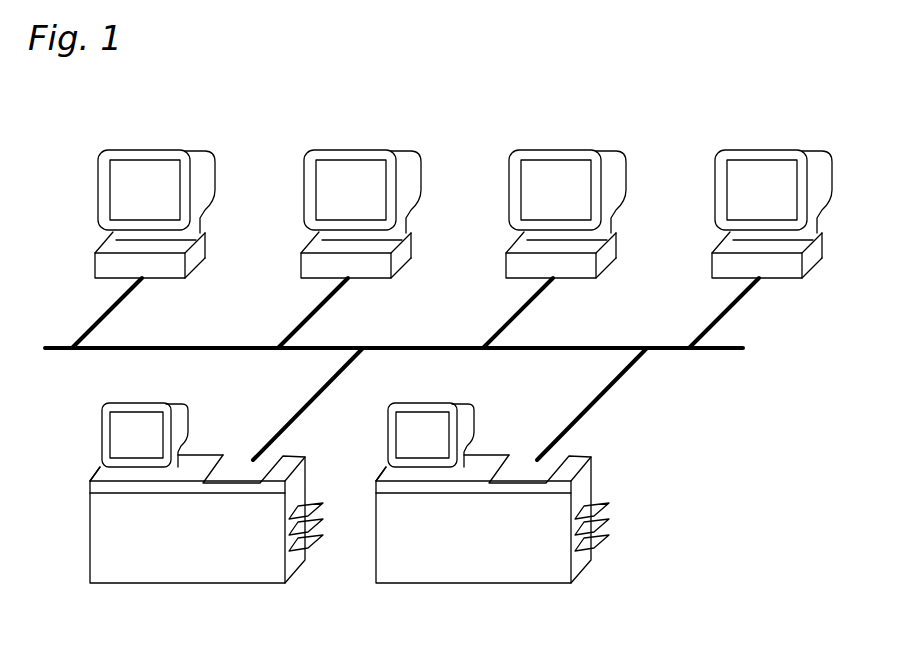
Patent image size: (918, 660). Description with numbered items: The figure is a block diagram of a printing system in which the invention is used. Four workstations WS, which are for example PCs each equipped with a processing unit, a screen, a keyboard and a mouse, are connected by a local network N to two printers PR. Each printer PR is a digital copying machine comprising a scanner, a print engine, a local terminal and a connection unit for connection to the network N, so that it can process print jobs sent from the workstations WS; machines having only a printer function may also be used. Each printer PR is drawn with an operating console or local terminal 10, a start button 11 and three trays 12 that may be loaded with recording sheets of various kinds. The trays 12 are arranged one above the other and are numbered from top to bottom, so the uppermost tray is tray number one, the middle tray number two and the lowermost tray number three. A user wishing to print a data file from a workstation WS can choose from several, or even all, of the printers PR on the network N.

The workstation WS is at (160, 150).
The printer PR is at (237, 573).
The local network N is at (670, 351).
The local terminal 10 is at (115, 440).
The start button 11 is at (105, 478).
The trays 12 is at (316, 548).